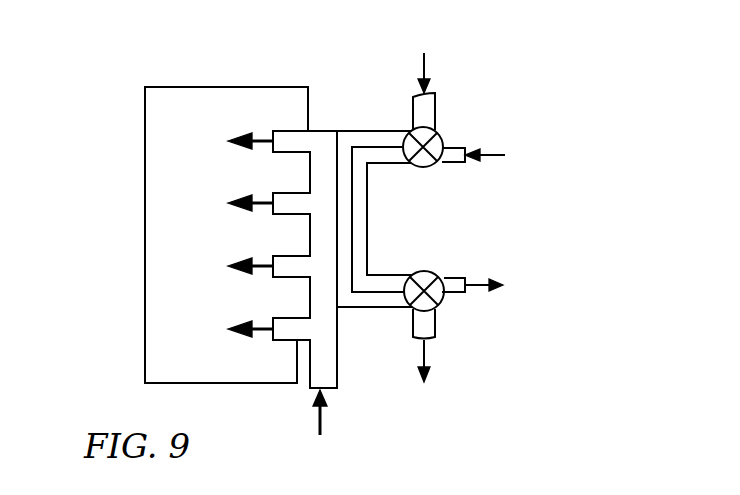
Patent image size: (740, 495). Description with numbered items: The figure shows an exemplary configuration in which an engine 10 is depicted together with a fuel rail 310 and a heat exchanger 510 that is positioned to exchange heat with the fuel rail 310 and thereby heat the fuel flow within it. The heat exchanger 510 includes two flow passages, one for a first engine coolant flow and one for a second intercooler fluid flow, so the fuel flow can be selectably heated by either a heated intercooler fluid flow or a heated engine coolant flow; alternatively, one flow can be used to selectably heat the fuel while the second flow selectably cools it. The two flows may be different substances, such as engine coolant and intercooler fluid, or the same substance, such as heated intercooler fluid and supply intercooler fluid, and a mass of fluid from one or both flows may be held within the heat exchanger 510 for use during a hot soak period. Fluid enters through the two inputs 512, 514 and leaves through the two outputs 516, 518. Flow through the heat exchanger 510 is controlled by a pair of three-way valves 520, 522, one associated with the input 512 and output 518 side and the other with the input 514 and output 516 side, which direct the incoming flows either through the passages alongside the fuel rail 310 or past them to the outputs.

The engine 10 is at (213, 83).
The fuel rail 310 is at (321, 128).
The heat exchanger 510 is at (369, 240).
The input 512 is at (438, 112).
The input 514 is at (451, 140).
The output 516 is at (440, 325).
The output 518 is at (462, 296).
The three-way valve 520 is at (434, 170).
The three-way valve 522 is at (432, 269).